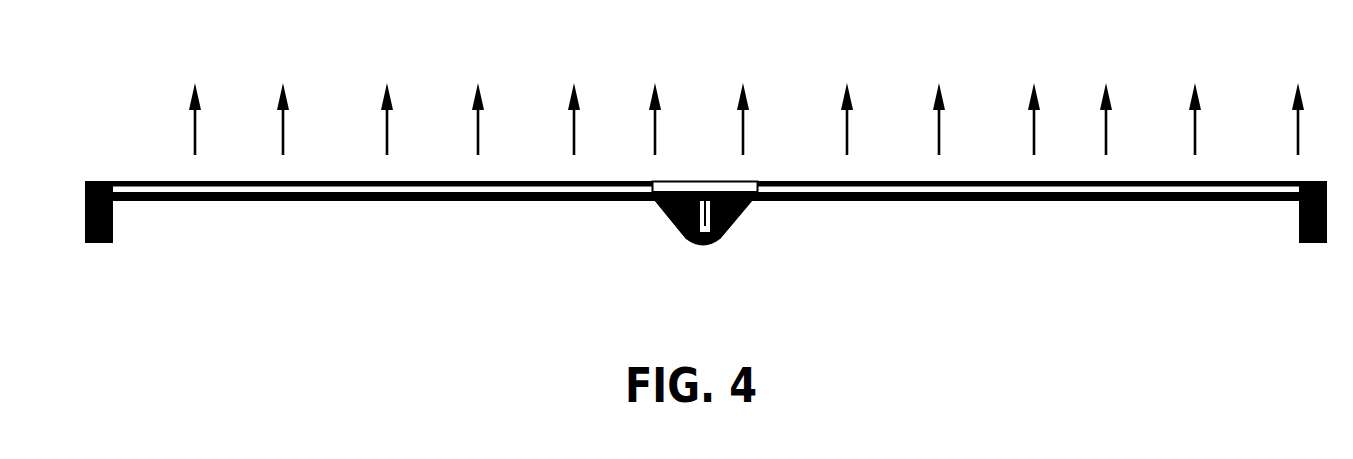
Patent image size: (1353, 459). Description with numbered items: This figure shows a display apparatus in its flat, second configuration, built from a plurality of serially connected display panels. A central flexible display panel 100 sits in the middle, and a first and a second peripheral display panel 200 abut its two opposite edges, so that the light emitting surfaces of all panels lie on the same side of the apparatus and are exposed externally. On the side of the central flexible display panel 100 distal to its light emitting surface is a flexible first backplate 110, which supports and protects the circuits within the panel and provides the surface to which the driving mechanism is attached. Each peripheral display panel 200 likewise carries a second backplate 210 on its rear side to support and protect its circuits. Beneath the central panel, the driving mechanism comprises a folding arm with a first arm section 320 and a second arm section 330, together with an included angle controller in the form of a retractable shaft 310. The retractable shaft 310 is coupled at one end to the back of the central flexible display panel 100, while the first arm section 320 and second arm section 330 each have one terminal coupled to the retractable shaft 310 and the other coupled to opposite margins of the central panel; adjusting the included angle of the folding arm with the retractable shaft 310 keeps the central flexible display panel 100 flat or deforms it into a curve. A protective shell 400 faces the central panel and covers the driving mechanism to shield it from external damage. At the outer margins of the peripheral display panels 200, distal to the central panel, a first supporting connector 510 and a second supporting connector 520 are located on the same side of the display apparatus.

The central flexible display panel 100 is at (700, 154).
The first backplate 110 is at (742, 203).
The peripheral display panel 200 is at (222, 138).
The second backplate 210 is at (370, 201).
The retractable shaft 310 is at (702, 245).
The first arm section 320 is at (748, 207).
The second arm section 330 is at (670, 213).
The protective shell 400 is at (725, 233).
The first supporting connector 510 is at (113, 225).
The second supporting connector 520 is at (1300, 220).